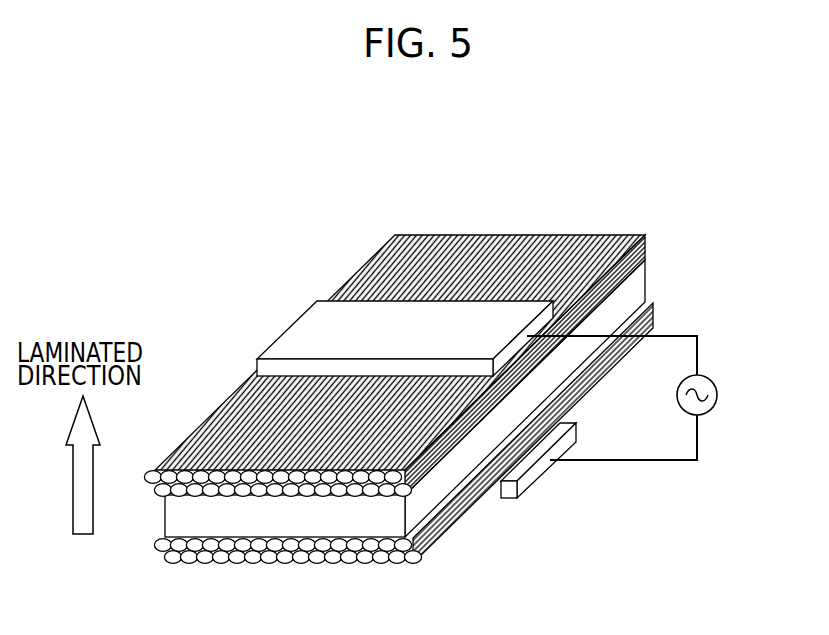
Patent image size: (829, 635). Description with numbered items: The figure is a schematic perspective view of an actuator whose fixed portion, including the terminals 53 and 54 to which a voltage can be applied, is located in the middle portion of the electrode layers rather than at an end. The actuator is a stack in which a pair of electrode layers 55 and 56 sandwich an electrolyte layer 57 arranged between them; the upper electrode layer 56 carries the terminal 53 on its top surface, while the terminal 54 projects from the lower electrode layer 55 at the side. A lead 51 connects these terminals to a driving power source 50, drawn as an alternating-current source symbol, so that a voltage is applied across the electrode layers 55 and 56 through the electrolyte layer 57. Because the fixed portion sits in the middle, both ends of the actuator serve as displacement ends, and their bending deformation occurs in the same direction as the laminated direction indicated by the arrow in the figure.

The driving power source 50 is at (713, 378).
The lead 51 is at (673, 336).
The terminal 53 is at (320, 325).
The terminal 54 is at (532, 475).
The electrode layer 55 is at (433, 540).
The electrode layer 56 is at (602, 250).
The electrolyte layer 57 is at (641, 292).